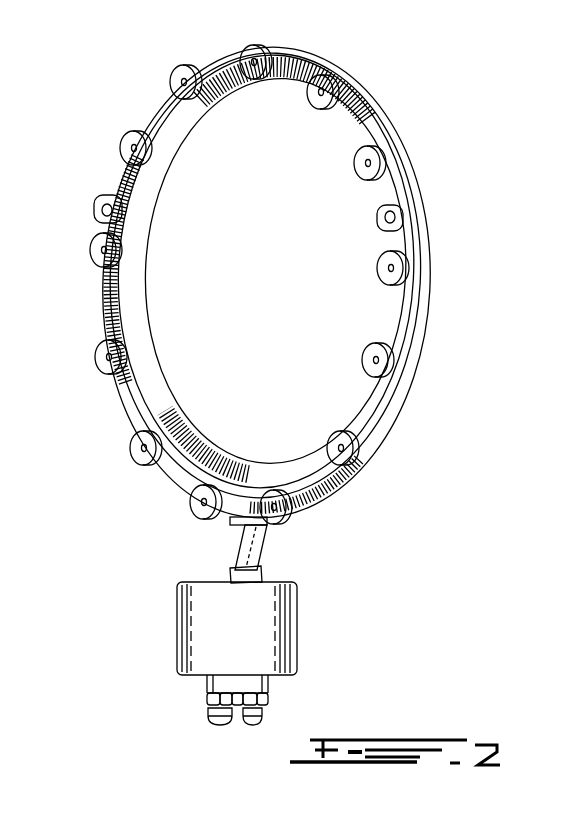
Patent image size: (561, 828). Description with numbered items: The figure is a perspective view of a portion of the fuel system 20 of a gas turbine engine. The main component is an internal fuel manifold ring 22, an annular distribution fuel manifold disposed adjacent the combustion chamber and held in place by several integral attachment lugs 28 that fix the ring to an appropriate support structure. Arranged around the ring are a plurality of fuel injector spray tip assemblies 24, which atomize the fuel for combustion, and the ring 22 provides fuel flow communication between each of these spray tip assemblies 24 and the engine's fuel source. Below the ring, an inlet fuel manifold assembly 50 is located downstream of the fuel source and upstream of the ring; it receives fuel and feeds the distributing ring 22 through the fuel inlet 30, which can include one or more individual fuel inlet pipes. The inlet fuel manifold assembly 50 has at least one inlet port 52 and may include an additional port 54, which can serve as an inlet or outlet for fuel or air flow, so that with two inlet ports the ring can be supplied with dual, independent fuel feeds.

The fuel system 20 is at (410, 85).
The internal fuel manifold ring 22 is at (420, 306).
The fuel injector spray tip assemblies 24 is at (378, 362).
The integral attachment lugs 28 is at (98, 202).
The fuel inlet 30 is at (262, 543).
The inlet fuel manifold assembly 50 is at (318, 634).
The inlet port 52 is at (265, 721).
The additional port 54 is at (210, 713).